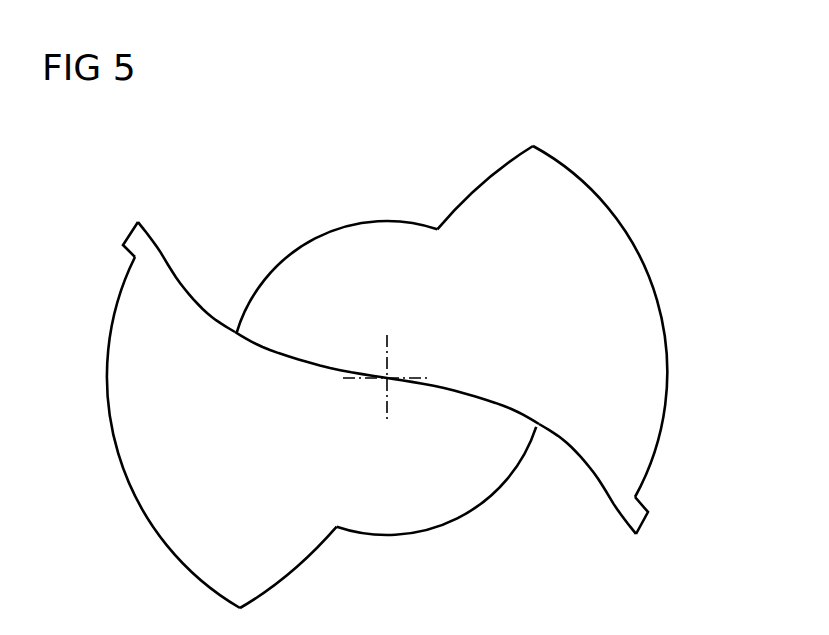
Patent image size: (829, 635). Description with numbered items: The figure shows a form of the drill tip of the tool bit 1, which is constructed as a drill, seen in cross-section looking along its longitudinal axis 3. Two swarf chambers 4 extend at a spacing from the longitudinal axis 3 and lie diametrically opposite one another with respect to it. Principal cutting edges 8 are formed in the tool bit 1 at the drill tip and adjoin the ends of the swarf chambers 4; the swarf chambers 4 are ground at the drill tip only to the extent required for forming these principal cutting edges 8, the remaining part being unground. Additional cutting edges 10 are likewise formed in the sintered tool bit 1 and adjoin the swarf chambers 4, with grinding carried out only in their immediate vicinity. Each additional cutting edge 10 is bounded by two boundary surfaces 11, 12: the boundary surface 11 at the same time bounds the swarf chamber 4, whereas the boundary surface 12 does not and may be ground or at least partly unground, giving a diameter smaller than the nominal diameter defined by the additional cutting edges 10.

The tool bit 1 is at (245, 165).
The longitudinal axis 3 is at (389, 376).
The swarf chamber 4 is at (336, 214).
The principal cutting edge 8 is at (268, 352).
The additional cutting edge 10 is at (138, 222).
The boundary surface 11 is at (183, 283).
The boundary surface 12 is at (107, 372).